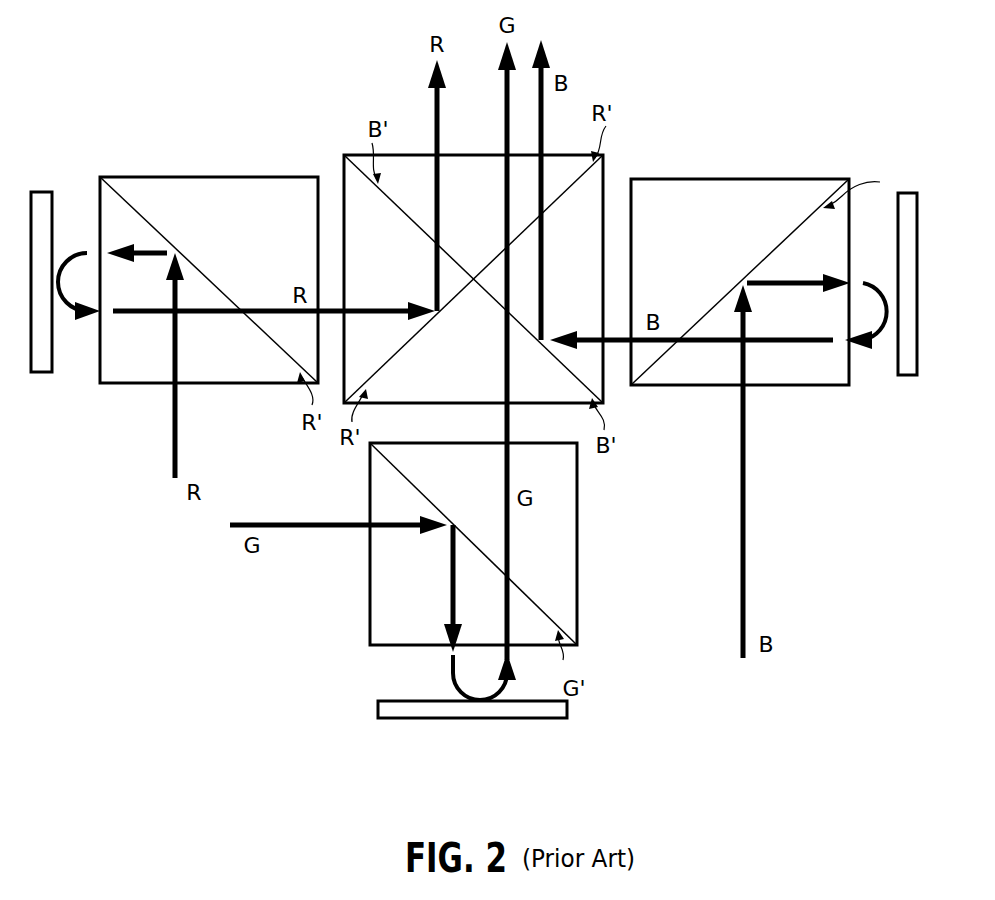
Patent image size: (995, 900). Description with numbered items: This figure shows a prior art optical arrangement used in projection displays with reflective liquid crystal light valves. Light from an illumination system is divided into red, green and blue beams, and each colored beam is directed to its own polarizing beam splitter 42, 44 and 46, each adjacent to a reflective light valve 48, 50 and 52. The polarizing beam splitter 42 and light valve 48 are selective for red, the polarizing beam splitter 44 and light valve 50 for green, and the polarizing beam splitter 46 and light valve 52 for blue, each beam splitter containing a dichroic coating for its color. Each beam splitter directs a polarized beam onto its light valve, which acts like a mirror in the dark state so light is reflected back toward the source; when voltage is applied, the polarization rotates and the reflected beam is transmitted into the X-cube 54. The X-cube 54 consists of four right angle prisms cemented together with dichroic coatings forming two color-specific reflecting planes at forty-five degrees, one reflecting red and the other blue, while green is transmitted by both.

The polarizing beam splitter 42 is at (207, 176).
The polarizing beam splitter 44 is at (578, 544).
The polarizing beam splitter 46 is at (740, 178).
The reflective light valve 48 is at (41, 190).
The reflective light valve 50 is at (470, 720).
The reflective light valve 52 is at (911, 378).
The X-cube 54 is at (606, 176).